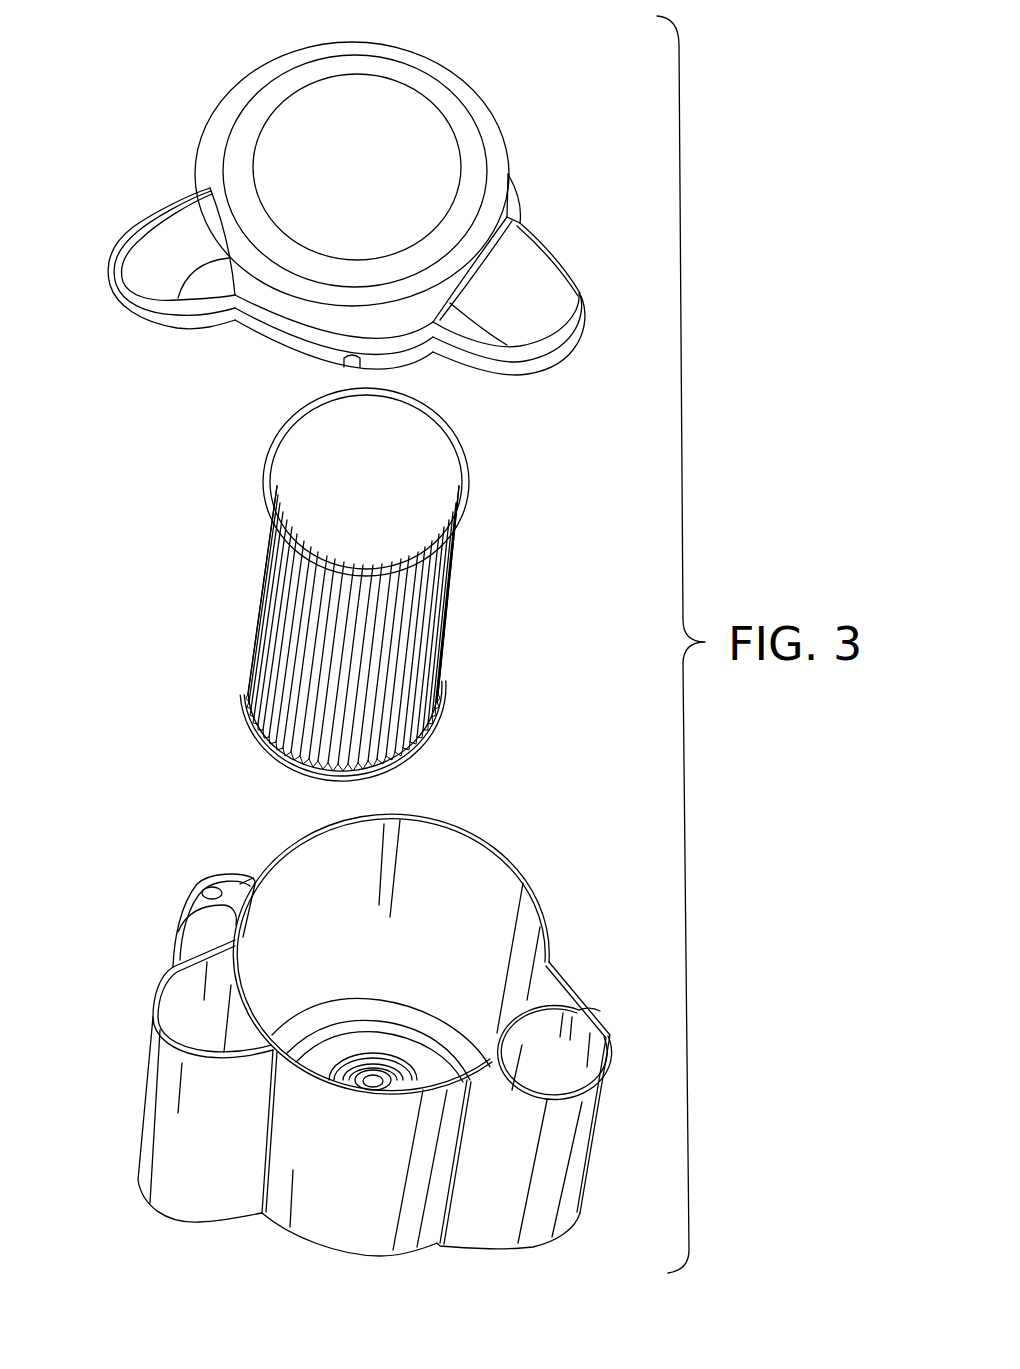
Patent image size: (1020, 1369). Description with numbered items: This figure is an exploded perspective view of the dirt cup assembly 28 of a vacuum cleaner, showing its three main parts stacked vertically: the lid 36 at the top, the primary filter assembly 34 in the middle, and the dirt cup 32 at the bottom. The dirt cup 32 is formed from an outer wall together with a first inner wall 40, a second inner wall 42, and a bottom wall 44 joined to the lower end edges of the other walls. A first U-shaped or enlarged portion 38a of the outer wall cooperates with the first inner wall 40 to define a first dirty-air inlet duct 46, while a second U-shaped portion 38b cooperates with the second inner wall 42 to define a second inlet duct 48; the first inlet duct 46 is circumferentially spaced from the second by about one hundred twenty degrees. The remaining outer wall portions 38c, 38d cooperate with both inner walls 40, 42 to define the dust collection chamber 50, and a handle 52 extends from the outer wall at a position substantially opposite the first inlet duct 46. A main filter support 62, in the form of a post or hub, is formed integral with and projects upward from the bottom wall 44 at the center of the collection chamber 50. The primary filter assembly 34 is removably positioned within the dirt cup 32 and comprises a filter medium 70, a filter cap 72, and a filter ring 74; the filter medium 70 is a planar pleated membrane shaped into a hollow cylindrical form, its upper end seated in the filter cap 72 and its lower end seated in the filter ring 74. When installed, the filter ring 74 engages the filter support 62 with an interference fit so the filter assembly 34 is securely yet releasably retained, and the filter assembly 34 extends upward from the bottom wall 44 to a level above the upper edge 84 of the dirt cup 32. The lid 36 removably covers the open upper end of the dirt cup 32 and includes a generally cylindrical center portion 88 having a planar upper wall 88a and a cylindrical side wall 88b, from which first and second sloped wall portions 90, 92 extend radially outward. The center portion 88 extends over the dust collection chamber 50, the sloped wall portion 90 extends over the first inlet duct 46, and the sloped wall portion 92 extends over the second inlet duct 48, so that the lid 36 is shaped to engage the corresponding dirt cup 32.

The dirt cup assembly 28 is at (135, 175).
The lid 36 is at (512, 108).
The center portion 88 is at (268, 62).
The planar upper wall 88a is at (375, 95).
The cylindrical side wall 88b is at (300, 312).
The first sloped wall portion 90 is at (528, 265).
The second sloped wall portion 92 is at (152, 272).
The primary filter assembly 34 is at (450, 630).
The filter cap 72 is at (450, 470).
The filter medium 70 is at (250, 628).
The filter ring 74 is at (425, 745).
The dirt cup 32 is at (542, 890).
The dust collection chamber 50 is at (348, 876).
The outer wall portion 38c is at (470, 833).
The upper edge 84 is at (413, 820).
The bottom wall 44 is at (366, 1010).
The main filter support 62 is at (387, 1052).
The second inlet duct 48 is at (198, 1026).
The second inner wall 42 is at (240, 990).
The handle 52 is at (215, 878).
The first inner wall 40 is at (540, 1010).
The first inlet duct 46 is at (565, 1066).
The second U-shaped portion 38b is at (150, 1138).
The outer wall portion 38d is at (360, 1240).
The first U-shaped portion 38a is at (572, 1180).